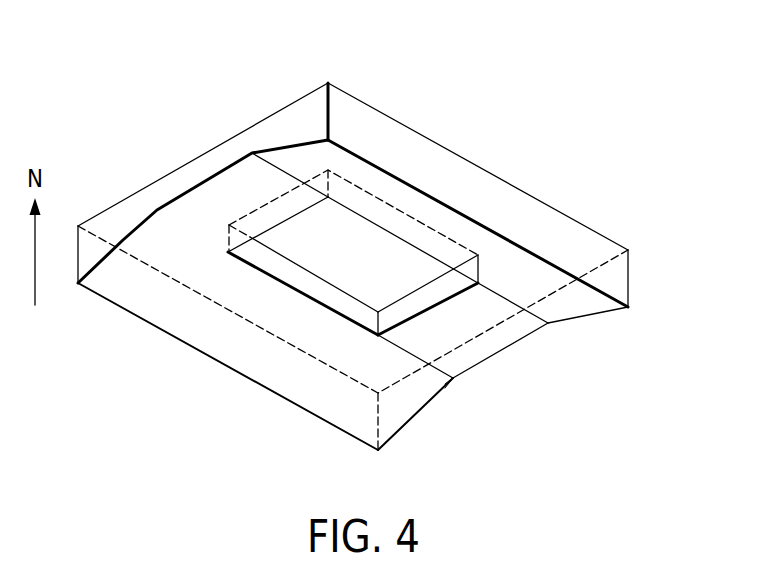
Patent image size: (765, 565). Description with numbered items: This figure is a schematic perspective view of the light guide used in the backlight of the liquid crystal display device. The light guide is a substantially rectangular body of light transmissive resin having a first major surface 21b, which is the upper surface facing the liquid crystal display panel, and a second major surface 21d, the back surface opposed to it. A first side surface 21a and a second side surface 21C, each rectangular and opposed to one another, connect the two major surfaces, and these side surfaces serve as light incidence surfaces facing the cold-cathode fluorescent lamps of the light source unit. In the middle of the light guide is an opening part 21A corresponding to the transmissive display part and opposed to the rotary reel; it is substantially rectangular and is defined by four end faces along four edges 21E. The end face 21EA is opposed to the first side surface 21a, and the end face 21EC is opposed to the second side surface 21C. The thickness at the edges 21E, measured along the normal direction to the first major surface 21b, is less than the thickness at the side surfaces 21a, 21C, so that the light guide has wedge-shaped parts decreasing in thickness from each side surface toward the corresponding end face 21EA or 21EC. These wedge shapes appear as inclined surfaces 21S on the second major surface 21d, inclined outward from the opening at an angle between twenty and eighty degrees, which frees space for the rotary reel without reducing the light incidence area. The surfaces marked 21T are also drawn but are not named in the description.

The first side surface 21a is at (558, 233).
The first major surface 21b is at (383, 112).
The second side surface 21C is at (177, 345).
The second major surface 21d is at (548, 323).
The inclined surface 21S is at (530, 271).
The tapered surface 21T is at (197, 201).
The edge 21E is at (432, 279).
The opening part 21A is at (352, 250).
The end face 21EA is at (402, 255).
The end face 21EC is at (328, 295).